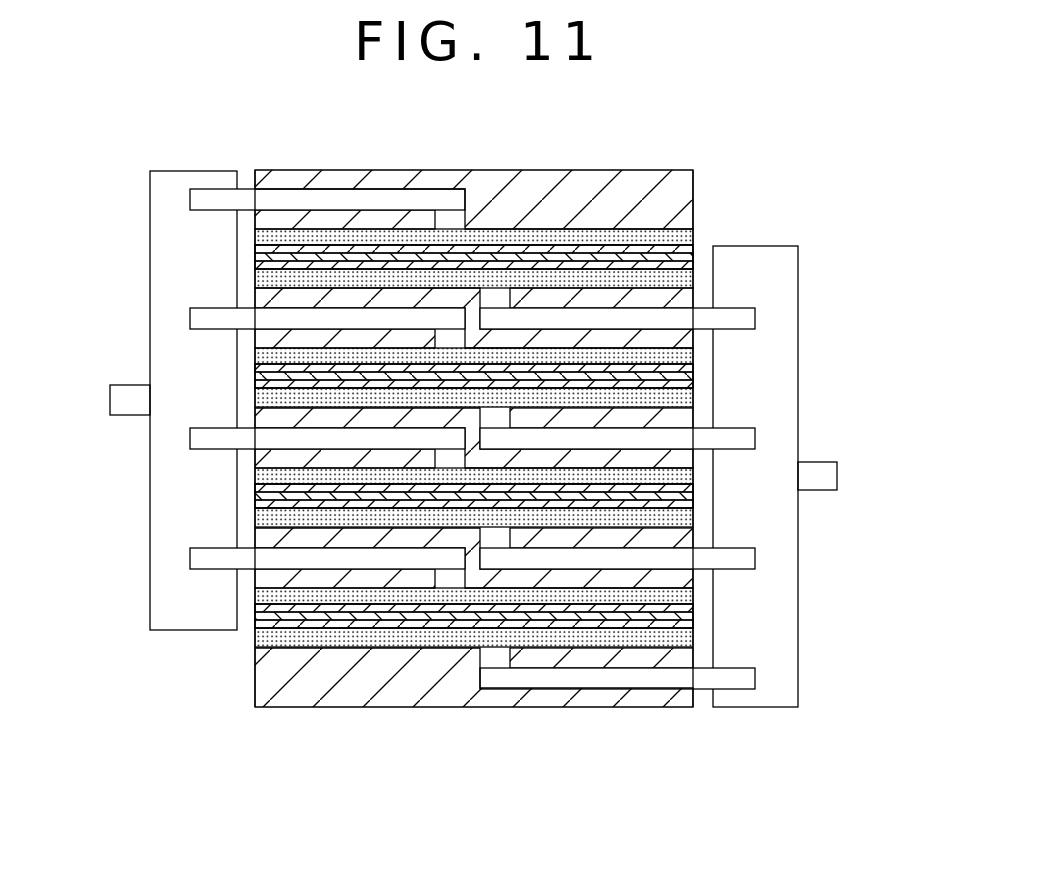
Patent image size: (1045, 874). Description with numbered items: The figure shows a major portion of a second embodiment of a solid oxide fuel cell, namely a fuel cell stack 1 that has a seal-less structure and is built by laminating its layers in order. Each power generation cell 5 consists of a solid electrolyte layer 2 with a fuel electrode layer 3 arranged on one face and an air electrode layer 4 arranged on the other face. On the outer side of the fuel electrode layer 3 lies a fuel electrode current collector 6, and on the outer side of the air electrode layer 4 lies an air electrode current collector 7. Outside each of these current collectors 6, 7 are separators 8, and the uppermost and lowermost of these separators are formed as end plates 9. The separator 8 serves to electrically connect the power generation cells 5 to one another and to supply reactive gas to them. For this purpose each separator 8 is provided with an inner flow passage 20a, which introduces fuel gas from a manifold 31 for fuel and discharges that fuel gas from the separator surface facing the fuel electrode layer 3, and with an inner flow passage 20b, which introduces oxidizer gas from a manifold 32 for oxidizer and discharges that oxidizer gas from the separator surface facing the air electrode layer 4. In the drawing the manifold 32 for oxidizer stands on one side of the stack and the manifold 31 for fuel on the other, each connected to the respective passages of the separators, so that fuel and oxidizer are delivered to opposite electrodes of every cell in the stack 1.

The fuel cell stack 1 is at (463, 736).
The solid electrolyte layer 2 is at (698, 253).
The fuel electrode layer 3 is at (702, 258).
The air electrode layer 4 is at (700, 250).
The power generation cell 5 is at (760, 128).
The fuel electrode current collector 6 is at (695, 280).
The air electrode current collector 7 is at (640, 235).
The separator 8 is at (258, 300).
The end plate 9 is at (532, 185).
The inner flow passage 20a is at (663, 320).
The inner flow passage 20b is at (340, 200).
The manifold for fuel 31 is at (798, 270).
The manifold for oxidizer 32 is at (160, 202).